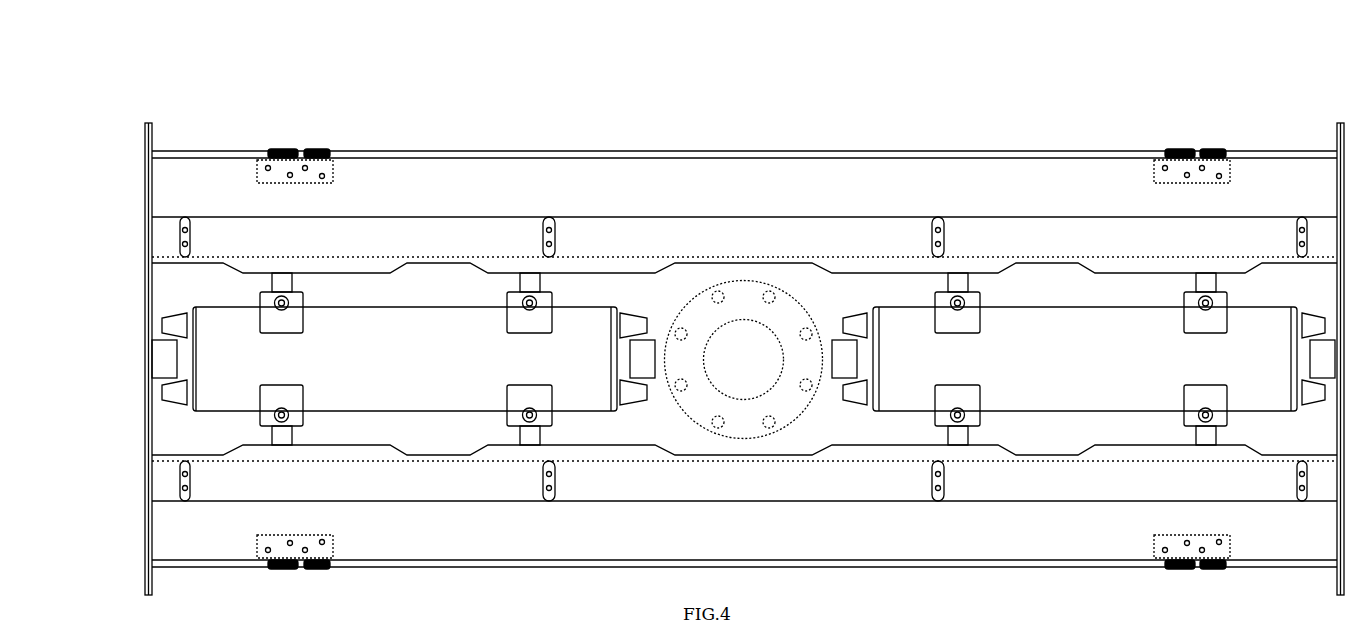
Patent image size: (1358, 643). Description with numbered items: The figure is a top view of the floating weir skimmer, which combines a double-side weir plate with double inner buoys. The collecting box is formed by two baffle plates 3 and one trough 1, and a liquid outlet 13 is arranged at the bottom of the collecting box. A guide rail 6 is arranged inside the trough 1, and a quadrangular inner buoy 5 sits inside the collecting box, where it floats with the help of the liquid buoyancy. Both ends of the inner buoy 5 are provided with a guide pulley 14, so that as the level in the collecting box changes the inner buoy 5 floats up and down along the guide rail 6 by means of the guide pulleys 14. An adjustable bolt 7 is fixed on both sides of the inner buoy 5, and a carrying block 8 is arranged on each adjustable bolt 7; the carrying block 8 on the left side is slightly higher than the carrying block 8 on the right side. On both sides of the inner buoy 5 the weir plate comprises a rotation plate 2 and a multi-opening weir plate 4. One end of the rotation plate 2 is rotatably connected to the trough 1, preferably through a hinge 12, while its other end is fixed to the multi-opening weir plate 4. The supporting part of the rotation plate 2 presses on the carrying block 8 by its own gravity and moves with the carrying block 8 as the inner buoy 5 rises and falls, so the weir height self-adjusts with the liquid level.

The trough 1 is at (741, 97).
The rotation plate 2 is at (744, 269).
The baffle plate 3 is at (110, 316).
The multi-opening weir plate 4 is at (744, 155).
The inner buoy 5 is at (403, 224).
The guide rail 6 is at (676, 221).
The adjustable bolt 7 is at (1149, 184).
The carrying block 8 is at (473, 185).
The hinge 12 is at (1175, 110).
The liquid outlet 13 is at (707, 238).
The guide pulley 14 is at (1017, 220).